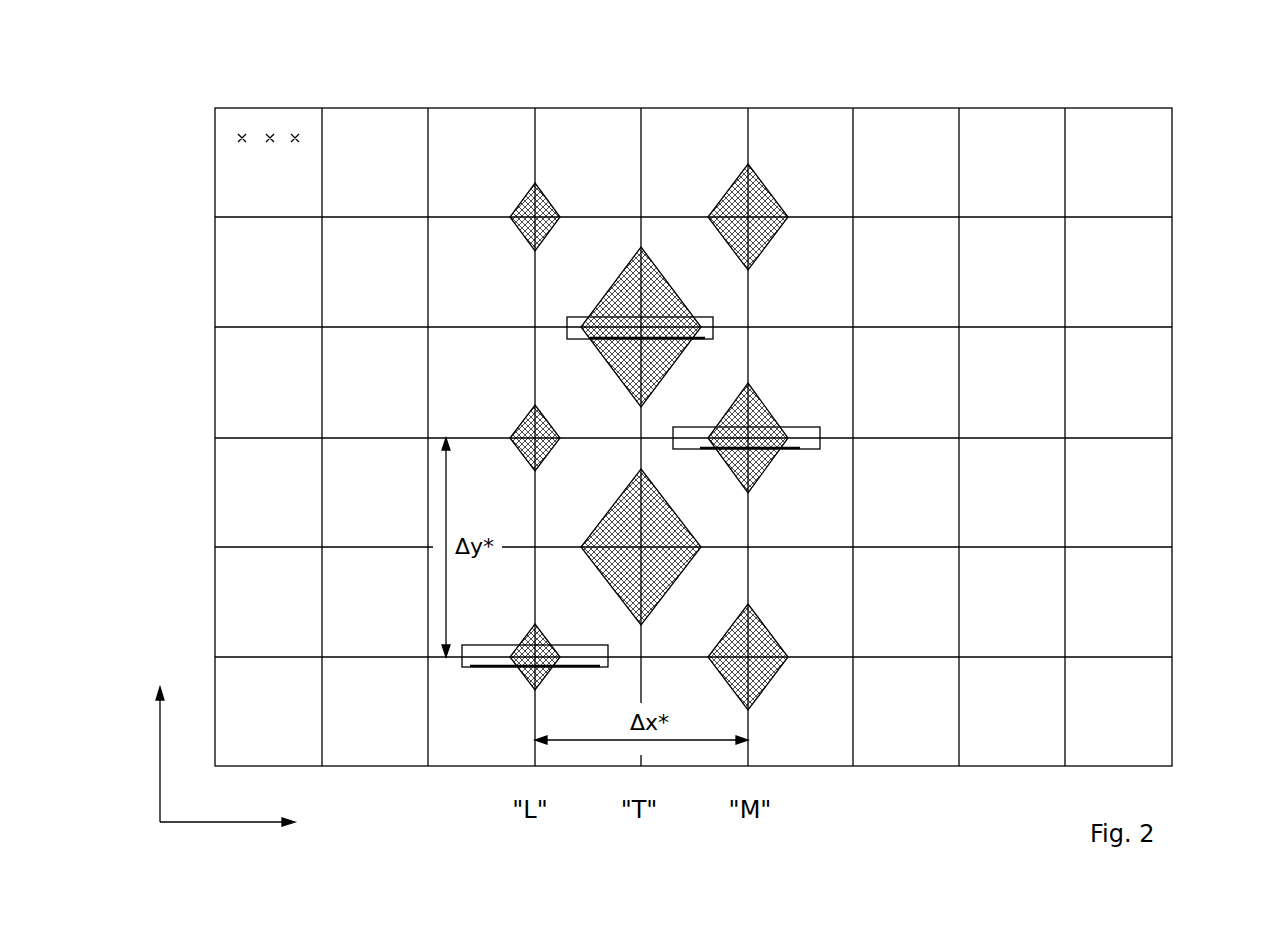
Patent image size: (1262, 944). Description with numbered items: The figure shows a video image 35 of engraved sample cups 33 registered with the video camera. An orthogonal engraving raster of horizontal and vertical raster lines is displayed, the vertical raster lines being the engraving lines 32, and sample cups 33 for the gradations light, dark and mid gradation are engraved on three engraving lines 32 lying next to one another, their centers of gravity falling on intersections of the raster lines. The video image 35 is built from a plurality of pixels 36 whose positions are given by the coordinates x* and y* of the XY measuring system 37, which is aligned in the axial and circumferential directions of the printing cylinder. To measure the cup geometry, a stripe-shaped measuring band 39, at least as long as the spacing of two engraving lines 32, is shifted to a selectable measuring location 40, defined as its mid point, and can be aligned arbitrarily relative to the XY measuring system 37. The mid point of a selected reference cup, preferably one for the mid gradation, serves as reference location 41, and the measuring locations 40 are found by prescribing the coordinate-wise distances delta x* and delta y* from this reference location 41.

The engraving lines 32 is at (1064, 162).
The sample cups 33 is at (722, 193).
The video image 35 is at (1173, 175).
The pixels 36 is at (290, 132).
The XY measuring system 37 is at (200, 822).
The measuring band 39 is at (700, 317).
The measuring location 40 is at (638, 328).
The reference location 41 is at (752, 448).